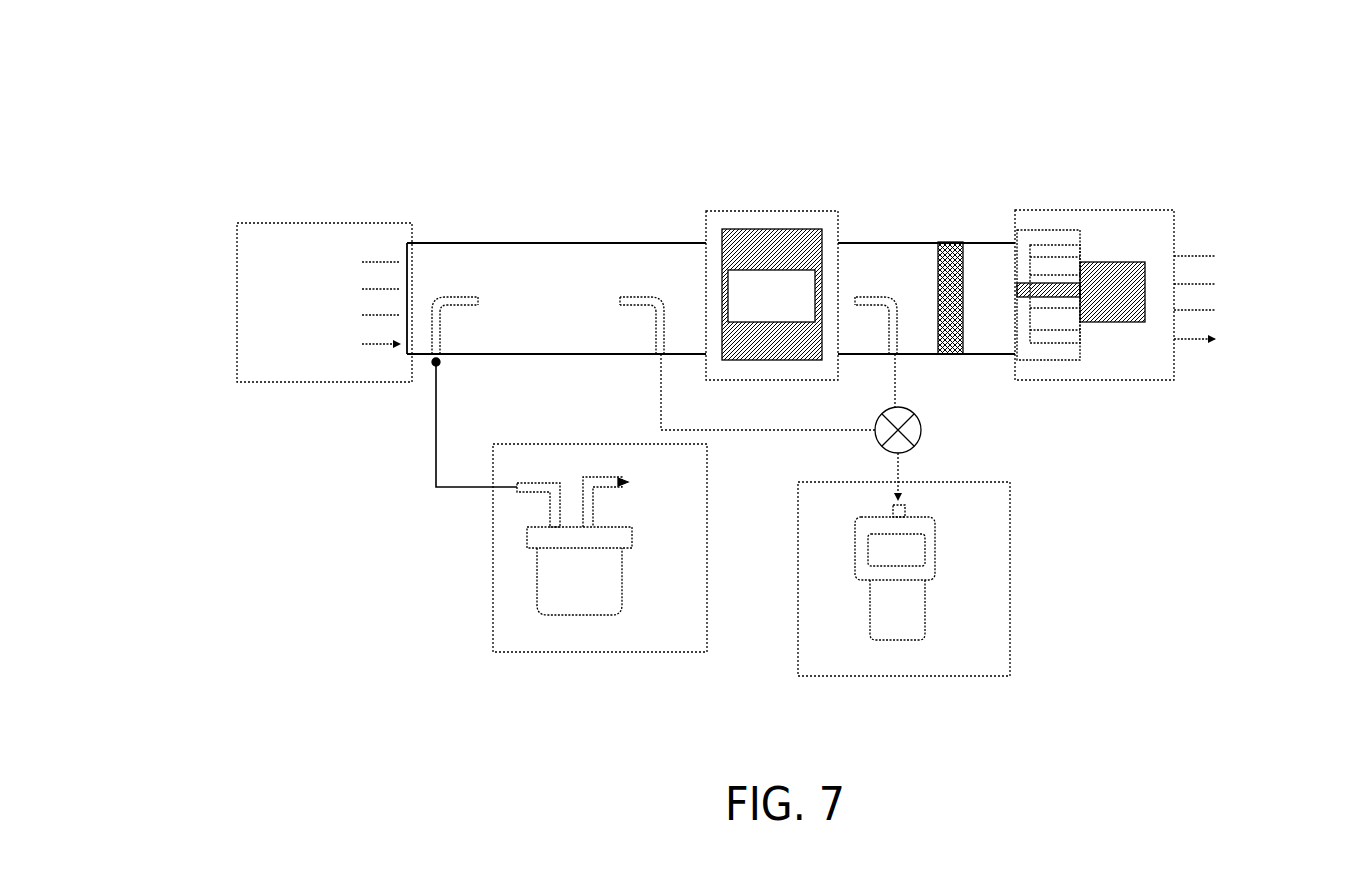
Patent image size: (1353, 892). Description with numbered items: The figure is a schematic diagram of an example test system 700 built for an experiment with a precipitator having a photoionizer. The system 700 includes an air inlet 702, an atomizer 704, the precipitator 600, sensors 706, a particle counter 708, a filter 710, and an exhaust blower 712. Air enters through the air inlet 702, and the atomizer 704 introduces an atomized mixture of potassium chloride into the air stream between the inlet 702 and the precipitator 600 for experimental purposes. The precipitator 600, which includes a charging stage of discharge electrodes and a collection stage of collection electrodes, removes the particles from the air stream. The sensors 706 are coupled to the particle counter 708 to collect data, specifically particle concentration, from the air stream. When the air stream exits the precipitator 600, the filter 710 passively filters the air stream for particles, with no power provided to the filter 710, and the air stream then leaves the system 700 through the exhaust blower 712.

The test system 700 is at (1302, 166).
The air inlet 702 is at (237, 264).
The atomizer 704 is at (555, 655).
The precipitator 600 is at (746, 211).
The sensors 706 is at (645, 290).
The particle counter 708 is at (795, 627).
The filter 710 is at (958, 242).
The exhaust blower 712 is at (1135, 210).